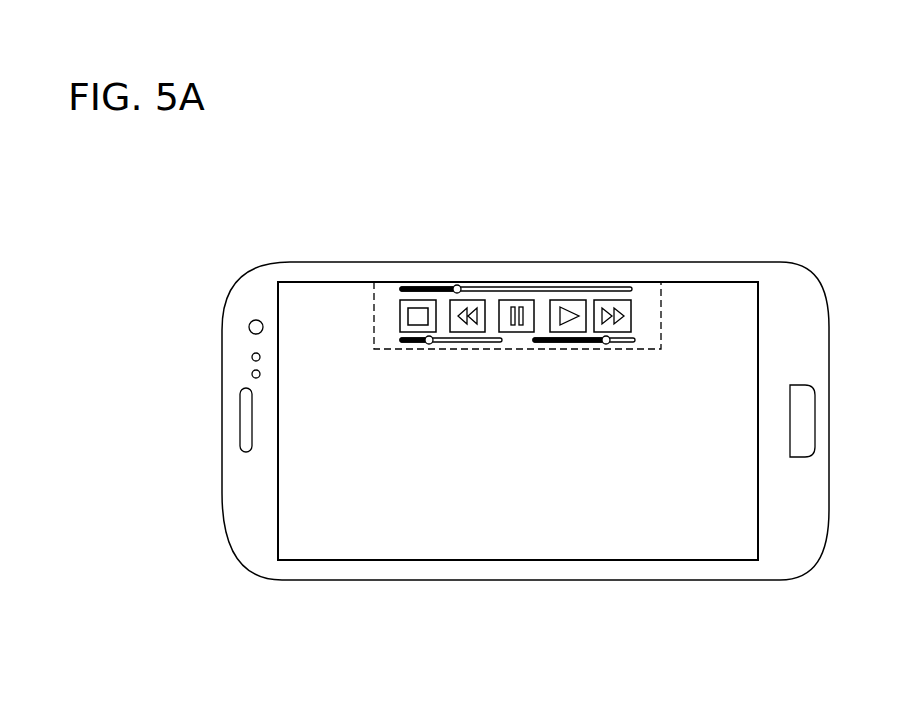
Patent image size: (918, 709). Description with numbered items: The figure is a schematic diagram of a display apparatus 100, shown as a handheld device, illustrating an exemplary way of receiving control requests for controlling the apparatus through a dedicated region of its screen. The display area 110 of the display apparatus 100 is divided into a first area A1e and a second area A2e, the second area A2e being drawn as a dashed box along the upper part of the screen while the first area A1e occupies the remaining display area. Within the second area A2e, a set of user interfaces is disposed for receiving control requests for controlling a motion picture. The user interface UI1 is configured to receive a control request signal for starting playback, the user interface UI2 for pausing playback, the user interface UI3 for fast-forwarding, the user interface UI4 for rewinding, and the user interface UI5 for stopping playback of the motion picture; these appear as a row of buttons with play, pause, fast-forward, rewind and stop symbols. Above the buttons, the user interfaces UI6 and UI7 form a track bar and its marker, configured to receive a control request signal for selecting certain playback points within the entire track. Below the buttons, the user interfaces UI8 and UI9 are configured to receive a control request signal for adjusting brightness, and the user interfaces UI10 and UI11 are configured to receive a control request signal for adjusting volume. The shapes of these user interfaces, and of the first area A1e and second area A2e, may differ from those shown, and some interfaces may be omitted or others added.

The display apparatus 100 is at (673, 262).
The display area 110 is at (723, 282).
The first area A1e is at (298, 293).
The second area A2e is at (383, 292).
The user interface UI1 is at (568, 298).
The user interface UI2 is at (522, 298).
The user interface UI3 is at (613, 298).
The user interface UI4 is at (477, 300).
The user interface UI5 is at (413, 300).
The user interface UI6 is at (437, 287).
The user interface UI7 is at (457, 285).
The user interface UI8 is at (412, 343).
The user interface UI9 is at (429, 345).
The user interface UI10 is at (606, 345).
The user interface UI11 is at (620, 343).